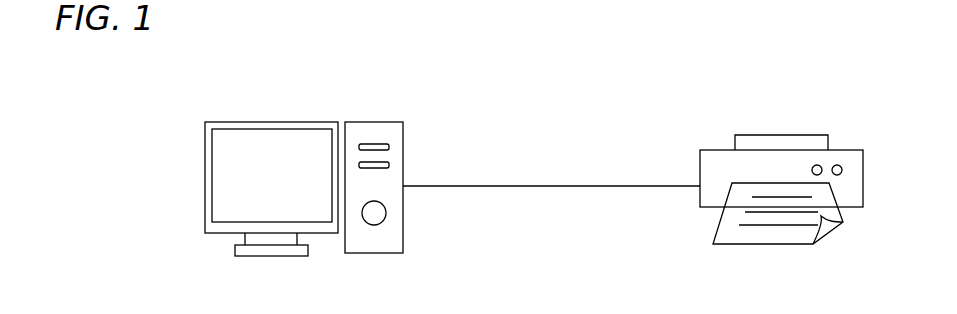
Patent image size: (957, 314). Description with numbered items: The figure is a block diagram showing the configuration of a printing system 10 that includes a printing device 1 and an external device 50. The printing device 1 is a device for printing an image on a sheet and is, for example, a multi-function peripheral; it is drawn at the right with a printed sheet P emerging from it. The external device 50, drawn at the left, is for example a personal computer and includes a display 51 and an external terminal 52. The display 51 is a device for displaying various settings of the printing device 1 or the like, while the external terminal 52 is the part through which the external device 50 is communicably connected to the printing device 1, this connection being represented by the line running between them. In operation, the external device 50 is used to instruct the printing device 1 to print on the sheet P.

The printing device 1 is at (845, 146).
The printing system 10 is at (582, 100).
The external device 50 is at (200, 97).
The display 51 is at (272, 122).
The external terminal 52 is at (373, 122).
The sheet P is at (733, 238).